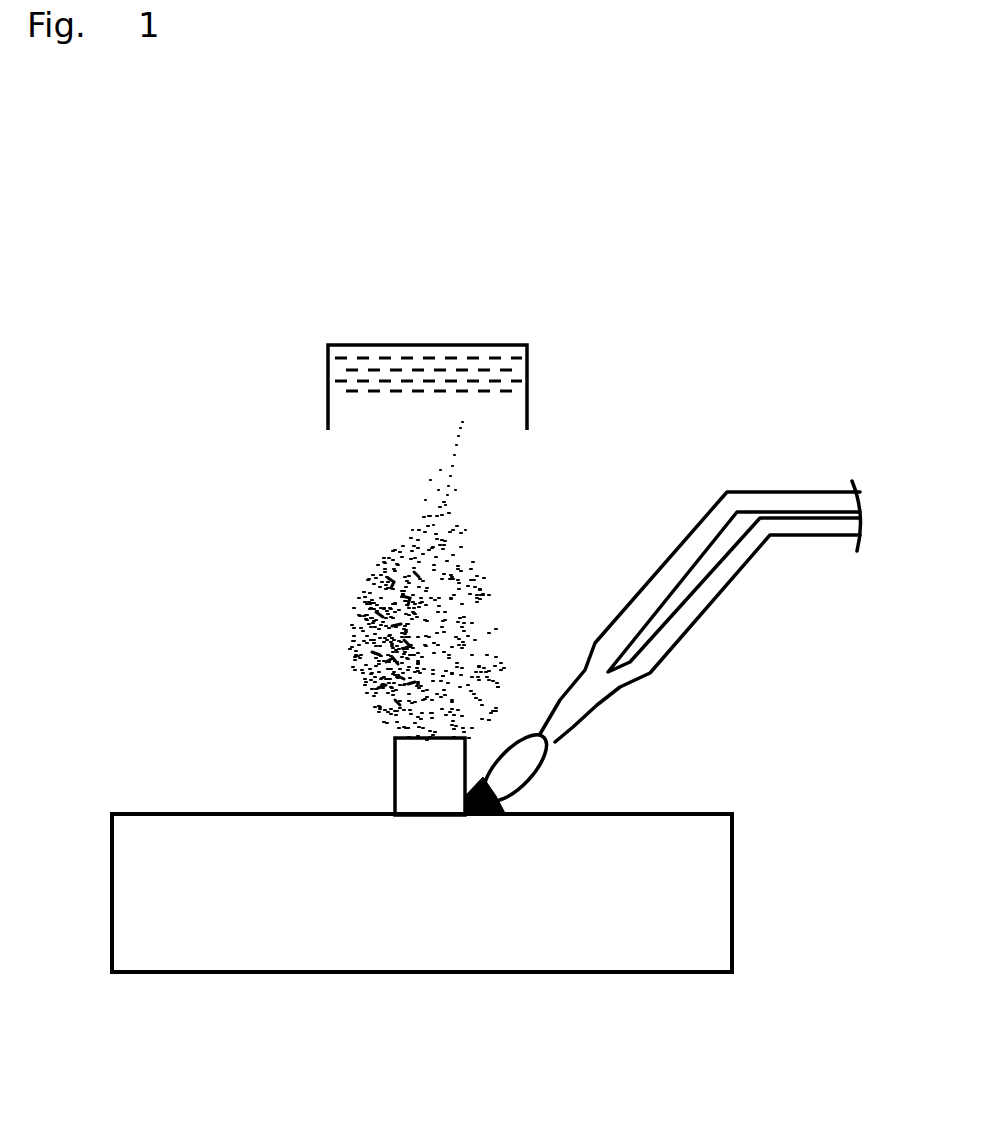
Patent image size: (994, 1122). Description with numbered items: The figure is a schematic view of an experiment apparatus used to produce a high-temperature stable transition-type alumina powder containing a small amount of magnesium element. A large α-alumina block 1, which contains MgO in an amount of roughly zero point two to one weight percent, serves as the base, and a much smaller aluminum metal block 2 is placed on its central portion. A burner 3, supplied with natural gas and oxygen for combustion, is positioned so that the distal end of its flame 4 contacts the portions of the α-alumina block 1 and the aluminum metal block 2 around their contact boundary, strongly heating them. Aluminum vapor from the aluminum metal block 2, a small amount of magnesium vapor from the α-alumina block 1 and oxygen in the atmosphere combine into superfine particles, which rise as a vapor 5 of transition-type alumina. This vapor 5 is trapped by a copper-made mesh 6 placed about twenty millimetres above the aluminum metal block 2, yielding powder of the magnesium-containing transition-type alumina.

The α-alumina block 1 is at (733, 887).
The aluminum metal block 2 is at (394, 772).
The burner 3 is at (715, 602).
The flame 4 is at (546, 768).
The vapor of transition-type alumina 5 is at (386, 567).
The copper-made mesh 6 is at (527, 370).